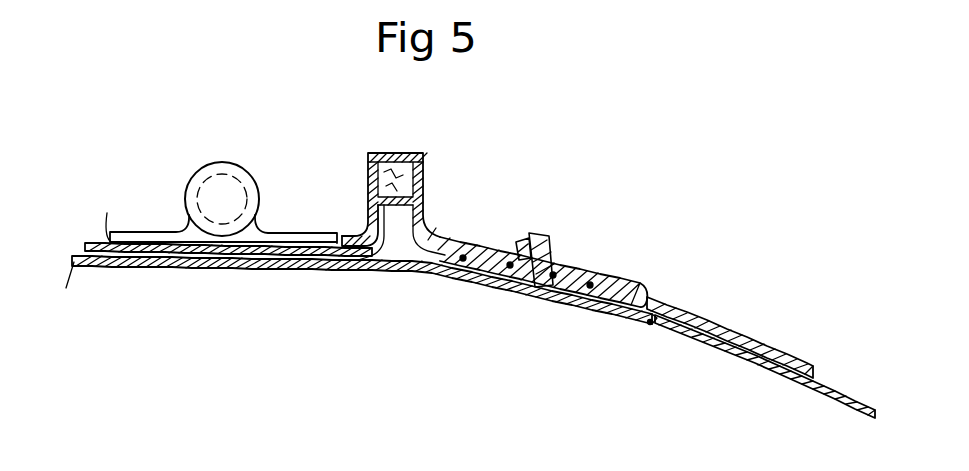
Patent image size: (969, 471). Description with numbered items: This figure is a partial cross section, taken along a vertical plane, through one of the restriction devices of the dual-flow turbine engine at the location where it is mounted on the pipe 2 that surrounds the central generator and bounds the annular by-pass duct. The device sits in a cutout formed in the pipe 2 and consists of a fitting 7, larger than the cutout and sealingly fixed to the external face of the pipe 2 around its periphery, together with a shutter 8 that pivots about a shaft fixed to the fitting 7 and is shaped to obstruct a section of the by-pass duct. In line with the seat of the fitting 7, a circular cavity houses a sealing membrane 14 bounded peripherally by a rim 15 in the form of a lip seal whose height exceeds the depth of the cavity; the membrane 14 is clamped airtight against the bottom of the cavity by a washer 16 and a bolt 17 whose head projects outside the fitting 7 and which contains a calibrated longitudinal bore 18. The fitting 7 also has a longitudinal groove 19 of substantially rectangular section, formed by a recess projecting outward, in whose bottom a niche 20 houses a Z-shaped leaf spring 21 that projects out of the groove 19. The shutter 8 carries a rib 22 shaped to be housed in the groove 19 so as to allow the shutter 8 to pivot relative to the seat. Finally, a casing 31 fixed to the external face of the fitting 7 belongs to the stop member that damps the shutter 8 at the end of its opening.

The pipe 2 is at (876, 405).
The fitting 7 is at (645, 285).
The shutter 8 is at (127, 266).
The sealing membrane 14 is at (580, 270).
The rim 15 is at (648, 322).
The washer 16 is at (463, 285).
The bolt 17 is at (522, 242).
The calibrated longitudinal bore 18 is at (540, 236).
The longitudinal groove 19 is at (368, 228).
The niche 20 is at (405, 152).
The Z-shaped leaf spring 21 is at (371, 155).
The rib 22 is at (368, 268).
The casing 31 is at (203, 192).